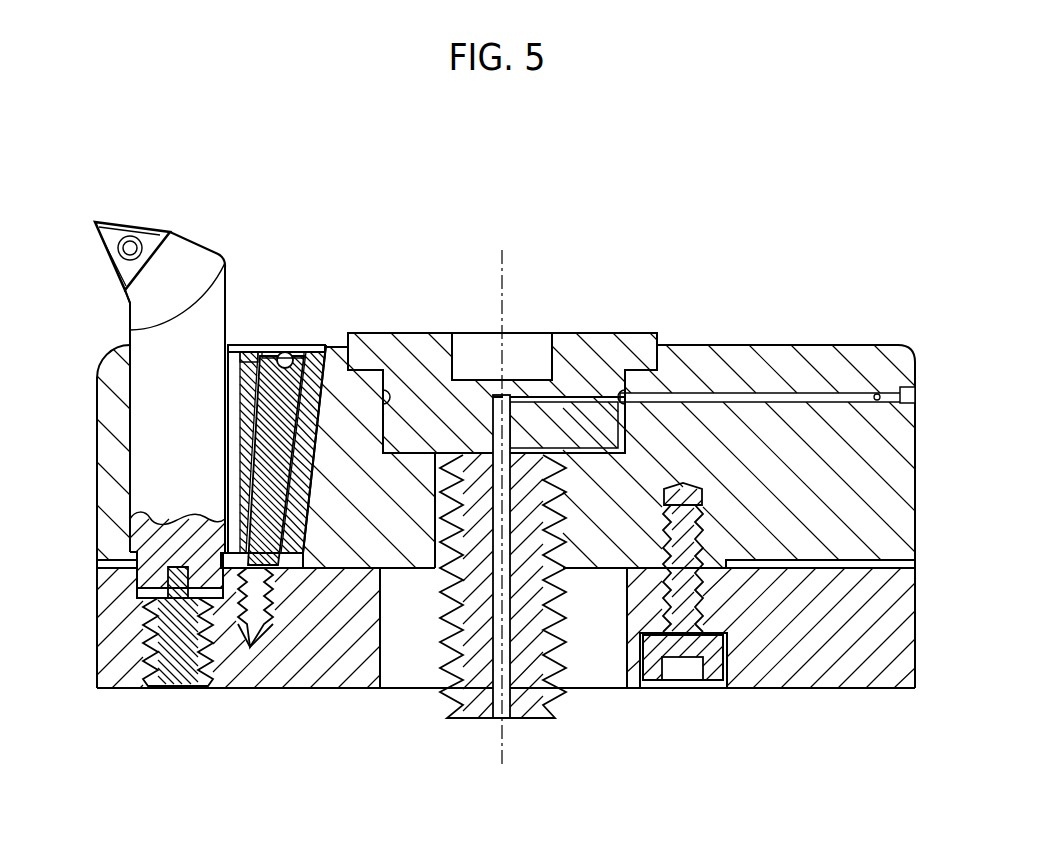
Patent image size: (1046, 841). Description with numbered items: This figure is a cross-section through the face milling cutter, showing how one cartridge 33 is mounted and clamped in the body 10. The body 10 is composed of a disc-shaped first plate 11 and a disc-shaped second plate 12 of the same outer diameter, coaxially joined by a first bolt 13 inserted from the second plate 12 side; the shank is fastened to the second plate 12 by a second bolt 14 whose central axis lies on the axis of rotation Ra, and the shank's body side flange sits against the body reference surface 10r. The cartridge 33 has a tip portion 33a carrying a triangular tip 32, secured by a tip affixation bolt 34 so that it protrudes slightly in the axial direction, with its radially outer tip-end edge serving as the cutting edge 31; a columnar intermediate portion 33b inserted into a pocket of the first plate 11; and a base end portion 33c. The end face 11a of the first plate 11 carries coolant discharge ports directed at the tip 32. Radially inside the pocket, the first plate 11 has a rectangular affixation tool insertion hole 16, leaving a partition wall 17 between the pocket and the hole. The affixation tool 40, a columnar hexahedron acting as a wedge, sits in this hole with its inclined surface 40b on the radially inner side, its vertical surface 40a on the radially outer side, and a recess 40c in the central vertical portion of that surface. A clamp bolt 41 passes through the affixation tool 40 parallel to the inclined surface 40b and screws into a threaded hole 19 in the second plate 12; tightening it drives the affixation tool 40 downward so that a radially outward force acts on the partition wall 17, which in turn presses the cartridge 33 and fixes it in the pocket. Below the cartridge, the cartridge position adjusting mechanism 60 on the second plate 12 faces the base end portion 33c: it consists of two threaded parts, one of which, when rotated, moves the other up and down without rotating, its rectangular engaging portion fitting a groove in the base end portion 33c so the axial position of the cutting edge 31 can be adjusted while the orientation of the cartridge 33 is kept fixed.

The body 10 is at (957, 270).
The body reference surface 10r is at (800, 688).
The first plate 11 is at (917, 411).
The end face of the first plate 11a is at (740, 343).
The second plate 12 is at (918, 606).
The first bolt 13 is at (687, 672).
The second bolt 14 is at (412, 331).
The affixation tool insertion hole 16 is at (281, 356).
The partition wall 17 is at (236, 346).
The threaded hole 19 is at (273, 630).
The cutting edge 31 is at (102, 221).
The tip 32 is at (155, 237).
The cartridge 33 is at (112, 278).
The tip portion 33a is at (127, 301).
The columnar intermediate portion 33b is at (128, 418).
The base end portion 33c is at (137, 573).
The tip affixation bolt 34 is at (130, 236).
The affixation tool 40 is at (322, 347).
The vertical surface 40a is at (227, 345).
The inclined surface 40b is at (320, 523).
The recess 40c is at (226, 412).
The clamp bolt 41 is at (298, 350).
The cartridge position adjusting mechanism 60 is at (180, 687).
The axis of rotation Ra is at (501, 493).